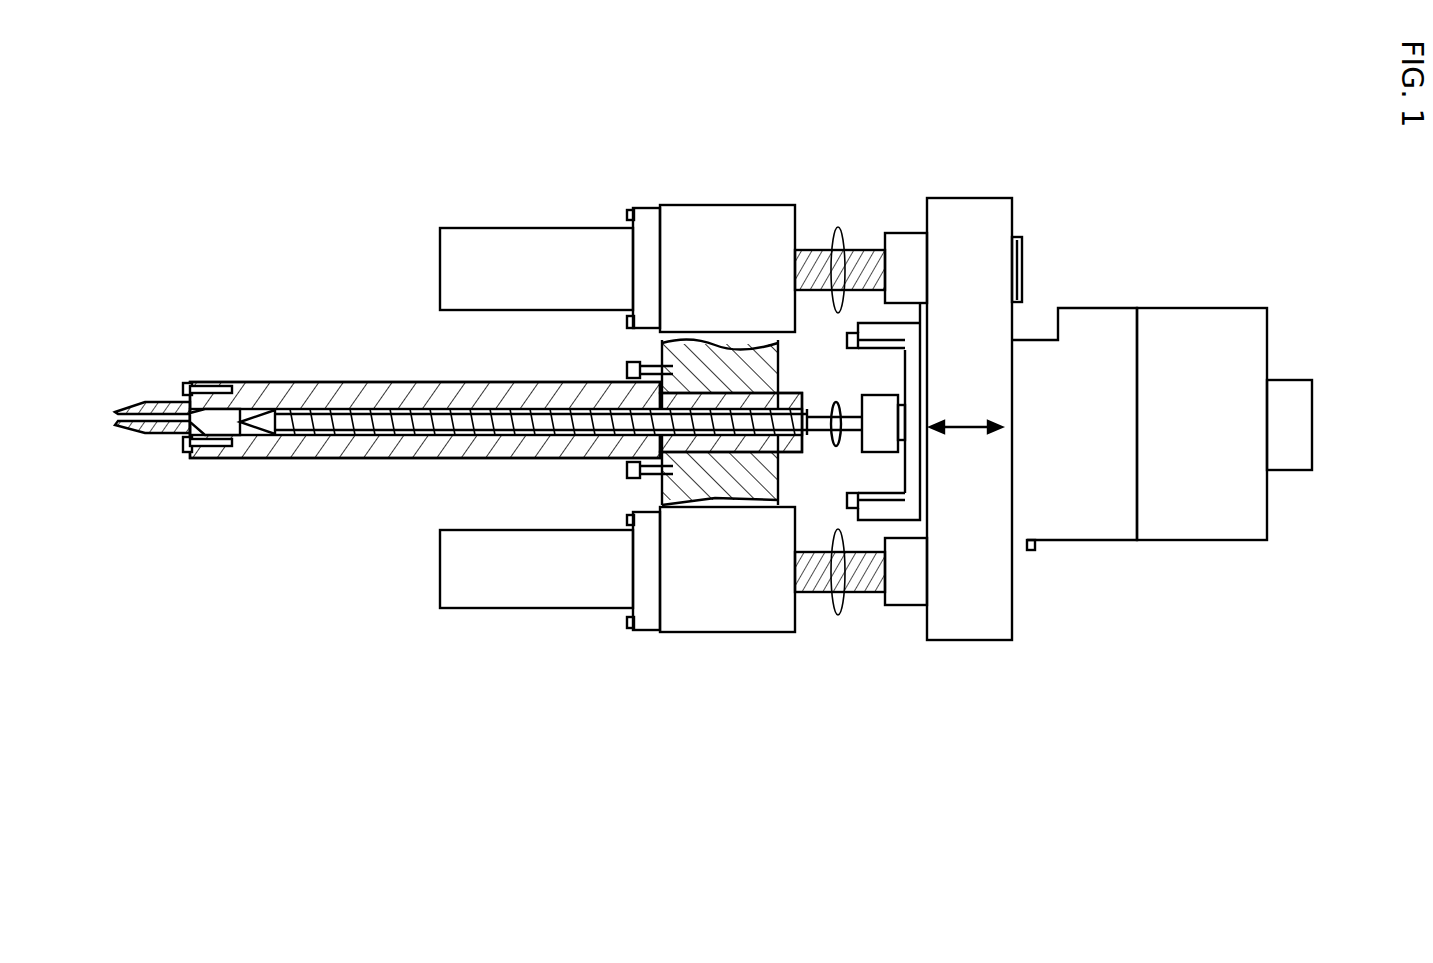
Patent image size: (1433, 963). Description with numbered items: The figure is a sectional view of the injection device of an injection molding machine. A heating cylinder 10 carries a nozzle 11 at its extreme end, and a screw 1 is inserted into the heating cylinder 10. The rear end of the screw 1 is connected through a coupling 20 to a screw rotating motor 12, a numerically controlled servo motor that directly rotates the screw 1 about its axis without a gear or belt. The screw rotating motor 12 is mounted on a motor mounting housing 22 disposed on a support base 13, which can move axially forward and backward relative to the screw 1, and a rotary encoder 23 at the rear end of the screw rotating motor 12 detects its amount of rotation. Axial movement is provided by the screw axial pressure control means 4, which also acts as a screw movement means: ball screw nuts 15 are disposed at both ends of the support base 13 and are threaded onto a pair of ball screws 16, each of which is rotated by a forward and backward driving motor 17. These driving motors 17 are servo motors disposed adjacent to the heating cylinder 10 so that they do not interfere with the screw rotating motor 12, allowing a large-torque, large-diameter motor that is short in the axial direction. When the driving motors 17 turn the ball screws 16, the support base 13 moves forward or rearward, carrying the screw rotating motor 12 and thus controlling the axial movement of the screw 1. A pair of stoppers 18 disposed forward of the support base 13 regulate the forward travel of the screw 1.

The screw 1 is at (365, 432).
The screw axial pressure control means 4 is at (900, 392).
The heating cylinder 10 is at (255, 382).
The nozzle 11 is at (162, 405).
The screw rotating motor 12 is at (1205, 540).
The support base 13 is at (962, 625).
The ball screw nut 15 is at (910, 240).
The ball screw 16 is at (812, 250).
The forward and backward driving motor 17 is at (507, 228).
The stopper 18 is at (868, 248).
The coupling 20 is at (888, 405).
The motor mounting housing 22 is at (1090, 540).
The rotary encoder 23 is at (1298, 470).